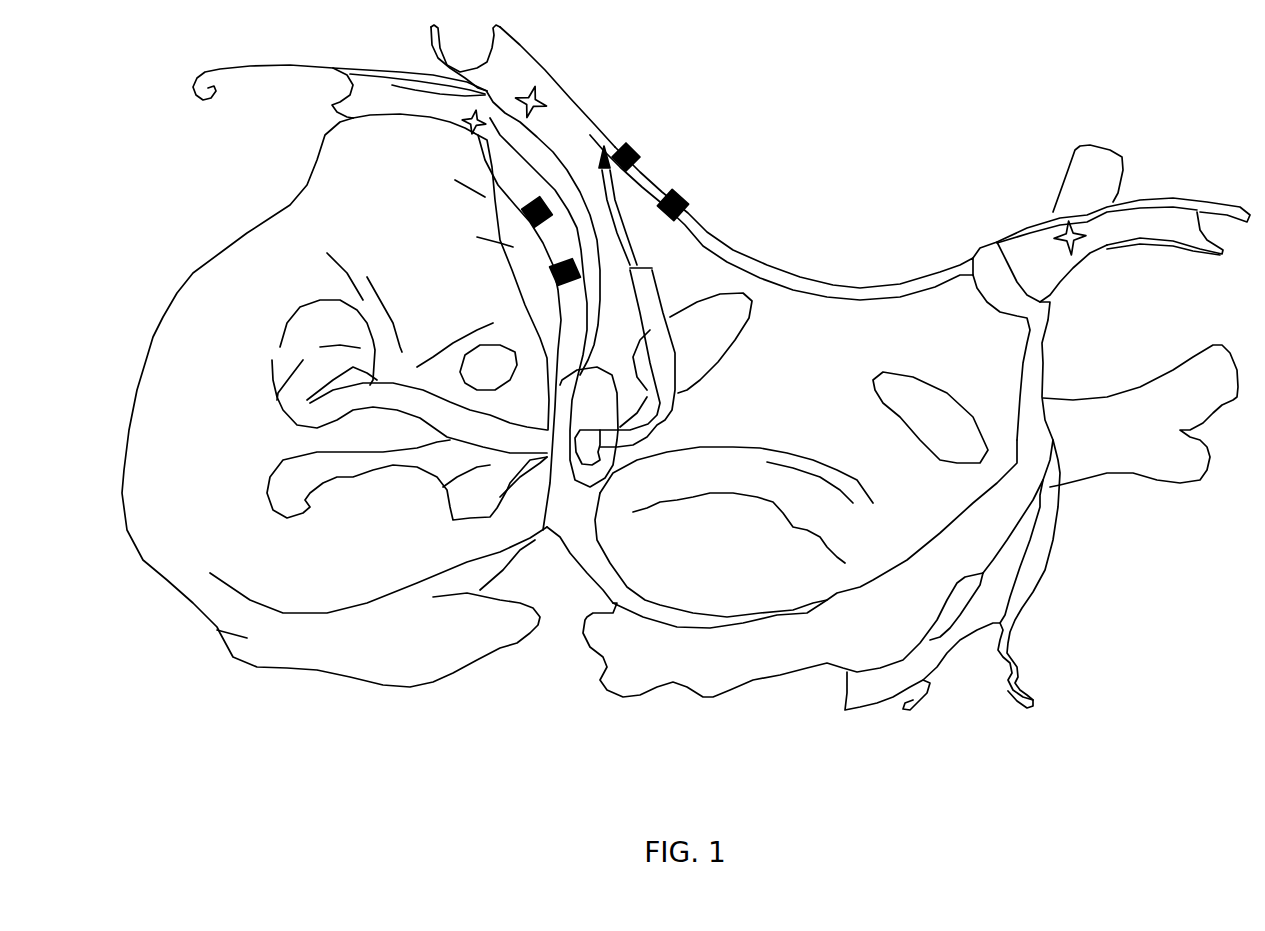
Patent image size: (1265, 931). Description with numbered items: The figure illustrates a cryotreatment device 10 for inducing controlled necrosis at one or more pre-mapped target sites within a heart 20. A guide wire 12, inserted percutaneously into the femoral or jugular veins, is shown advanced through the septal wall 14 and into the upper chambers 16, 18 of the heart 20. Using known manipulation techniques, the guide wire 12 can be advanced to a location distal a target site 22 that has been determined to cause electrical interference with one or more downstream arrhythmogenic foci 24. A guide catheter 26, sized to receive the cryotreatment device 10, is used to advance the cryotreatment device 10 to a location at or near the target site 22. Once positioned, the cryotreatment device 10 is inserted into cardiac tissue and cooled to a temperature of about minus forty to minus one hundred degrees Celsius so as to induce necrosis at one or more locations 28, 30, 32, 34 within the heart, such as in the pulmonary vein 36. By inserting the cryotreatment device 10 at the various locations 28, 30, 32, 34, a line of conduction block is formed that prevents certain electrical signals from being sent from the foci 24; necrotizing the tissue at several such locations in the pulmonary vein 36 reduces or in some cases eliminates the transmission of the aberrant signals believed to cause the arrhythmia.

The cryotreatment device 10 is at (794, 217).
The guide wire 12 is at (340, 67).
The septal wall 14 is at (313, 410).
The upper chamber 16 is at (335, 400).
The upper chamber 18 is at (892, 473).
The heart 20 is at (1030, 201).
The target site 22 is at (702, 200).
The arrhythmogenic foci 24 is at (774, 141).
The guide catheter 26 is at (644, 305).
The location 28 is at (523, 302).
The location 30 is at (726, 207).
The location 32 is at (488, 332).
The location 34 is at (680, 147).
The pulmonary vein 36 is at (587, 87).